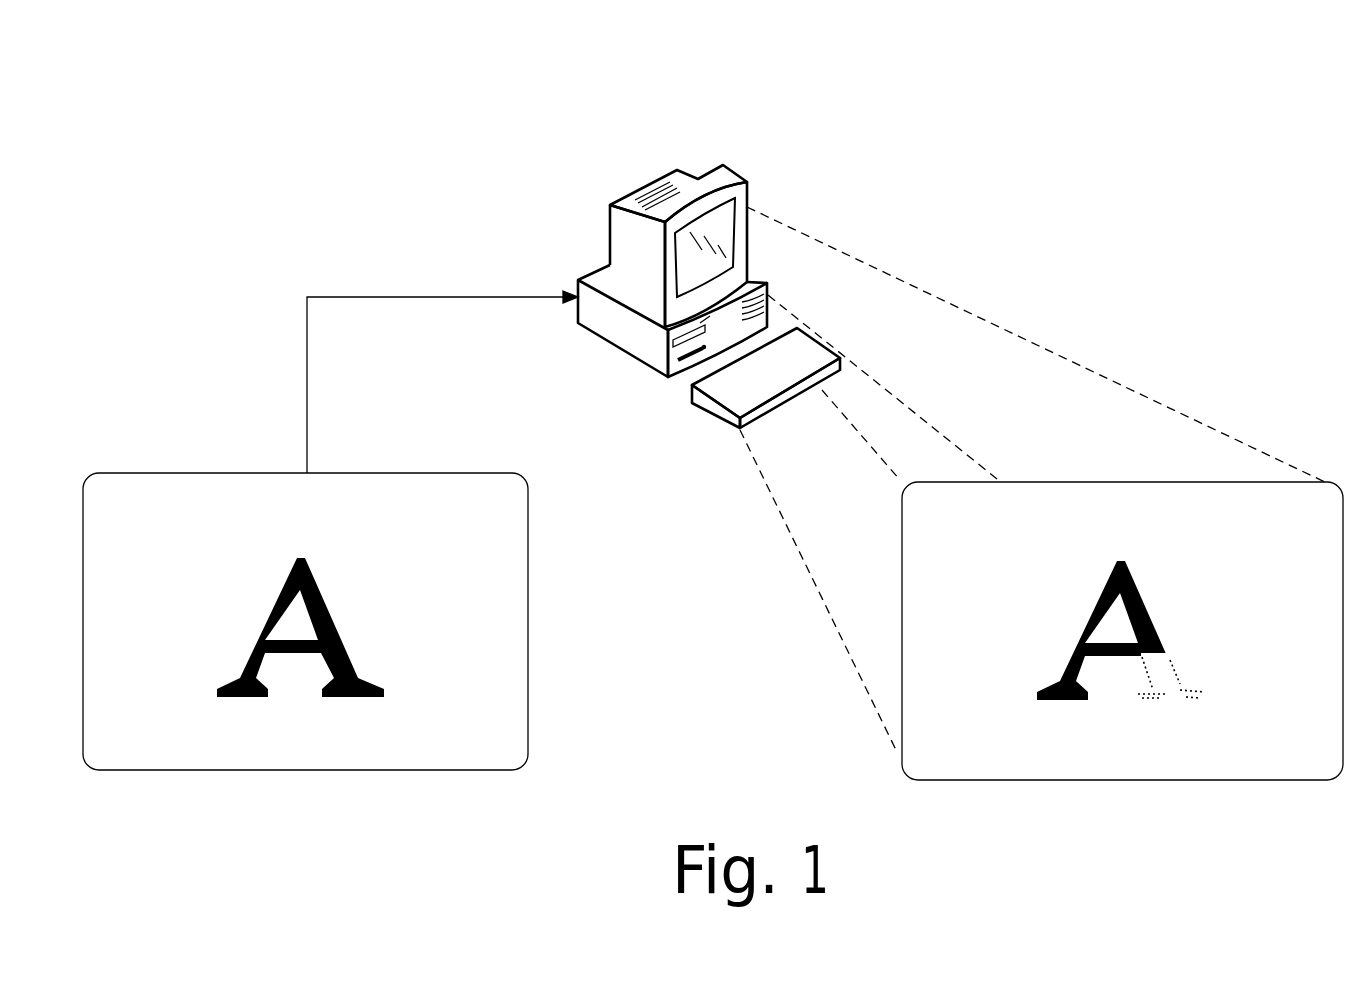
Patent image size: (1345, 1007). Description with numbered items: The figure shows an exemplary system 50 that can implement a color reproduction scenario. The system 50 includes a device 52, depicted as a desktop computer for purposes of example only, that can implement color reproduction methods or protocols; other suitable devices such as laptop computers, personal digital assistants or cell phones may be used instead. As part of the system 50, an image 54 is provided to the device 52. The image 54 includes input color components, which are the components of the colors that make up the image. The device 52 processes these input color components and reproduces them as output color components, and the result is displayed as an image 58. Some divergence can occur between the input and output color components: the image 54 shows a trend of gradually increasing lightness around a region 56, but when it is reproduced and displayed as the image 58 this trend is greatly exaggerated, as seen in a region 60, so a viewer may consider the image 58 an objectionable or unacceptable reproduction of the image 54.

The system 50 is at (713, 397).
The device 52 is at (640, 196).
The image 54 is at (345, 621).
The region 56 is at (353, 668).
The image 58 is at (1090, 631).
The region 60 is at (1177, 668).